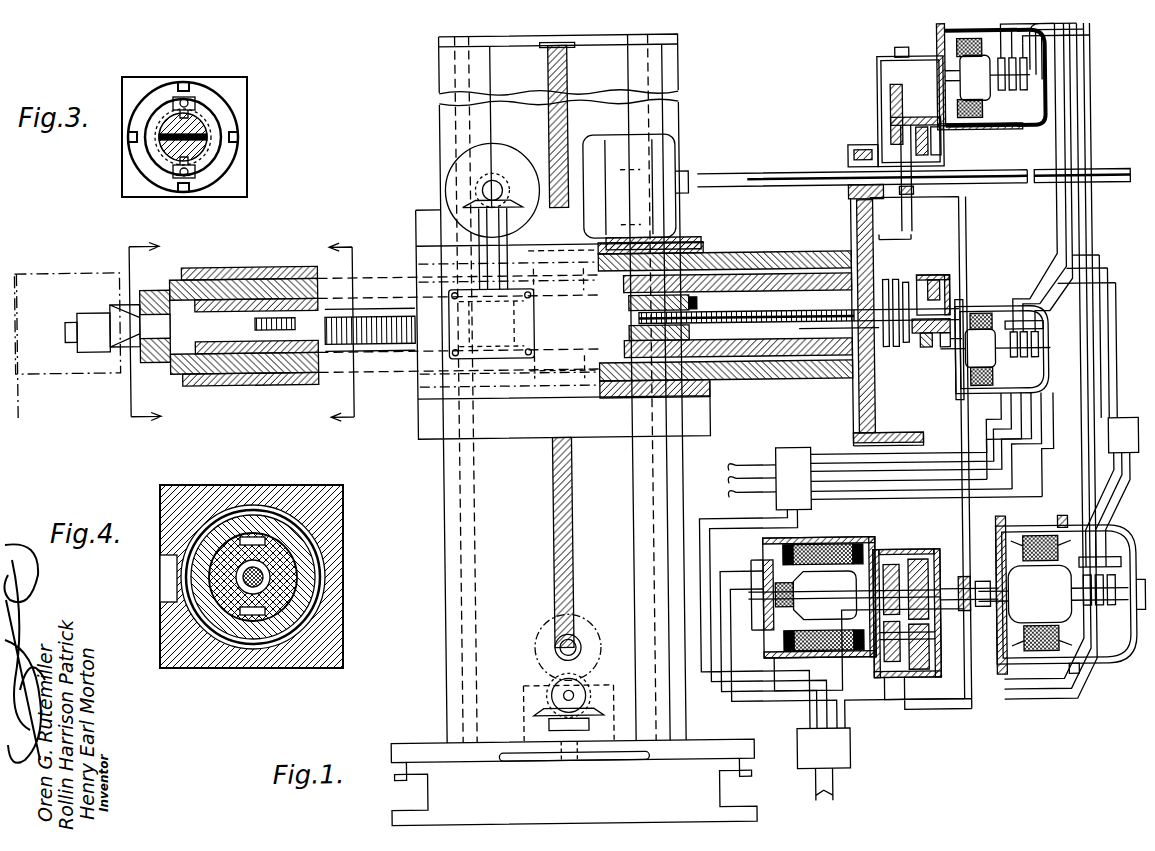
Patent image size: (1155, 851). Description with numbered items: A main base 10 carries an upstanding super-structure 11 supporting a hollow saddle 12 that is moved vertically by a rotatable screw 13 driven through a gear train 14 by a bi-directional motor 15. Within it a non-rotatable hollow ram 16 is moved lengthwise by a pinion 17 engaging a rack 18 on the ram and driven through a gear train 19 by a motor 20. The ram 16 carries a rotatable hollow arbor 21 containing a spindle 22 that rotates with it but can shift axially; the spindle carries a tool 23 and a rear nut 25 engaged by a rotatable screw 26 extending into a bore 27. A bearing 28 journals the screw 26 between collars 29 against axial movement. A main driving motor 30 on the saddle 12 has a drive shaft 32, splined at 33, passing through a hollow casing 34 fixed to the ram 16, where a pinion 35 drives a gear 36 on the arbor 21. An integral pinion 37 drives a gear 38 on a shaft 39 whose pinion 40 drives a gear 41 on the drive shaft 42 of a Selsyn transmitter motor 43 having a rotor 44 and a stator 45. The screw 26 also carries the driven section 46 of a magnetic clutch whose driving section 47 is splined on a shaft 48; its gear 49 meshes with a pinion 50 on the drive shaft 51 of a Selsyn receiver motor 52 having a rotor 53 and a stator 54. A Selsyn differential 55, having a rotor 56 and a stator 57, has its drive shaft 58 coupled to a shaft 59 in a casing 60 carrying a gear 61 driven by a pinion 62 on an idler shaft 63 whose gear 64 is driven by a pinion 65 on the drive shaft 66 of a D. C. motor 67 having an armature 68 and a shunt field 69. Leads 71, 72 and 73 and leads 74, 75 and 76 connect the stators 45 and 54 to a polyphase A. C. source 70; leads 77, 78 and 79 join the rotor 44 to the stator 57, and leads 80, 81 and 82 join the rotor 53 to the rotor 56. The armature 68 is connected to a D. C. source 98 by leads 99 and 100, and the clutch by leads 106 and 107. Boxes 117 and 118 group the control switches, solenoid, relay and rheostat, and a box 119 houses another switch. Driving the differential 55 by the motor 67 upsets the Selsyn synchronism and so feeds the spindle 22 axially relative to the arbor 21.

In FIG. 1, the main base 10 is at (574, 782).
In FIG. 1, the super-structure 11 is at (435, 75).
In FIG. 1, the saddle 12 is at (430, 400).
In FIG. 1, the screw 13 is at (571, 72).
In FIG. 1, the gear train 14 is at (594, 698).
In FIG. 1, the motor 15 is at (590, 625).
In FIG. 3, the ram 16 is at (238, 86).
In FIG. 4, the ram 16 is at (333, 503).
In FIG. 1, the ram 16 is at (243, 258).
In FIG. 1, the pinion 17 is at (492, 358).
In FIG. 4, the rack 18 is at (162, 578).
In FIG. 1, the rack 18 is at (395, 286).
In FIG. 1, the gear train 19 is at (495, 169).
In FIG. 1, the motor 20 is at (519, 134).
In FIG. 3, the arbor 21 is at (213, 120).
In FIG. 4, the arbor 21 is at (305, 565).
In FIG. 1, the arbor 21 is at (290, 294).
In FIG. 3, the spindle 22 is at (205, 143).
In FIG. 4, the spindle 22 is at (270, 557).
In FIG. 1, the spindle 22 is at (225, 266).
In FIG. 1, the tool 23 is at (96, 355).
In FIG. 1, the nut 25 is at (705, 303).
In FIG. 4, the screw 26 is at (262, 580).
In FIG. 1, the screw 26 is at (262, 314).
In FIG. 1, the bore 27 is at (240, 358).
In FIG. 1, the bearing 28 is at (858, 311).
In FIG. 1, the collars 29 is at (835, 333).
In FIG. 1, the main driving motor 30 is at (628, 125).
In FIG. 1, the drive shaft 32 is at (728, 175).
In FIG. 1, the spline 33 is at (784, 177).
In FIG. 1, the casing 34 is at (851, 204).
In FIG. 1, the pinion 35 is at (856, 151).
In FIG. 1, the gear 36 is at (853, 226).
In FIG. 1, the pinion 37 is at (902, 200).
In FIG. 1, the gear 38 is at (894, 98).
In FIG. 1, the shaft 39 is at (894, 125).
In FIG. 1, the pinion 40 is at (944, 149).
In FIG. 1, the gear 41 is at (940, 63).
In FIG. 1, the drive shaft 42 is at (904, 65).
In FIG. 1, the motor 43 is at (970, 27).
In FIG. 1, the rotor 44 is at (999, 100).
In FIG. 1, the stator 45 is at (1009, 115).
In FIG. 1, the driven section 46 is at (887, 353).
In FIG. 1, the driving section 47 is at (906, 353).
In FIG. 1, the shaft 48 is at (926, 338).
In FIG. 1, the gear 49 is at (937, 279).
In FIG. 1, the pinion 50 is at (929, 351).
In FIG. 1, the drive shaft 51 is at (944, 351).
In FIG. 1, the motor 52 is at (991, 304).
In FIG. 1, the rotor 53 is at (1001, 364).
In FIG. 1, the stator 54 is at (1001, 382).
In FIG. 1, the motor 55 is at (1118, 533).
In FIG. 1, the rotor 56 is at (1061, 618).
In FIG. 1, the stator 57 is at (1061, 639).
In FIG. 1, the drive shaft 58 is at (976, 615).
In FIG. 1, the shaft 59 is at (946, 606).
In FIG. 1, the casing 60 is at (901, 681).
In FIG. 1, the gear 61 is at (916, 563).
In FIG. 1, the pinion 62 is at (916, 673).
In FIG. 1, the idler shaft 63 is at (932, 641).
In FIG. 1, the gear 64 is at (881, 658).
In FIG. 1, the pinion 65 is at (888, 568).
In FIG. 1, the drive shaft 66 is at (866, 547).
In FIG. 1, the D. C. motor 67 is at (841, 536).
In FIG. 1, the armature 68 is at (844, 595).
In FIG. 1, the shunt field 69 is at (773, 555).
In FIG. 1, the source of polyphase A. C. voltage 70 is at (738, 479).
In FIG. 1, the lead 71 is at (1057, 229).
In FIG. 1, the lead 72 is at (1066, 216).
In FIG. 1, the lead 73 is at (1073, 203).
In FIG. 1, the lead 74 is at (1001, 459).
In FIG. 1, the lead 75 is at (993, 442).
In FIG. 1, the lead 76 is at (986, 429).
In FIG. 1, the lead 77 is at (1083, 197).
In FIG. 1, the lead 78 is at (1090, 211).
In FIG. 1, the lead 79 is at (1096, 224).
In FIG. 1, the lead 80 is at (1101, 331).
In FIG. 1, the lead 81 is at (1109, 343).
In FIG. 1, the lead 82 is at (1117, 366).
In FIG. 1, the source of D. C. voltage 98 is at (824, 793).
In FIG. 1, the lead 99 is at (846, 771).
In FIG. 1, the lead 100 is at (731, 571).
In FIG. 1, the lead 106 is at (961, 234).
In FIG. 1, the lead 107 is at (939, 239).
In FIG. 1, the box 117 is at (794, 478).
In FIG. 1, the box 118 is at (823, 748).
In FIG. 1, the box 119 is at (1123, 434).